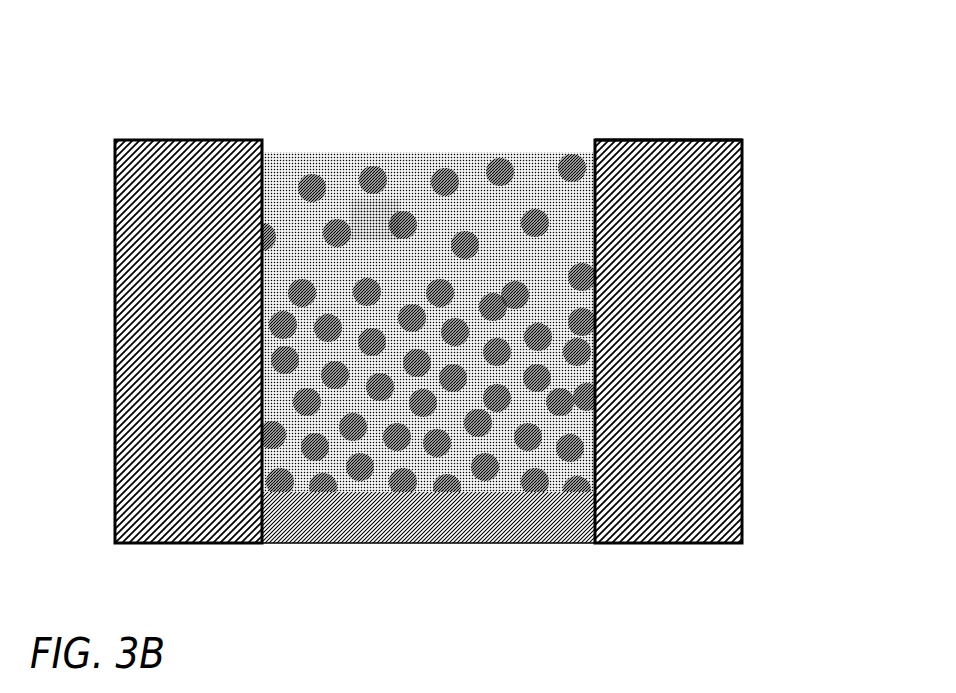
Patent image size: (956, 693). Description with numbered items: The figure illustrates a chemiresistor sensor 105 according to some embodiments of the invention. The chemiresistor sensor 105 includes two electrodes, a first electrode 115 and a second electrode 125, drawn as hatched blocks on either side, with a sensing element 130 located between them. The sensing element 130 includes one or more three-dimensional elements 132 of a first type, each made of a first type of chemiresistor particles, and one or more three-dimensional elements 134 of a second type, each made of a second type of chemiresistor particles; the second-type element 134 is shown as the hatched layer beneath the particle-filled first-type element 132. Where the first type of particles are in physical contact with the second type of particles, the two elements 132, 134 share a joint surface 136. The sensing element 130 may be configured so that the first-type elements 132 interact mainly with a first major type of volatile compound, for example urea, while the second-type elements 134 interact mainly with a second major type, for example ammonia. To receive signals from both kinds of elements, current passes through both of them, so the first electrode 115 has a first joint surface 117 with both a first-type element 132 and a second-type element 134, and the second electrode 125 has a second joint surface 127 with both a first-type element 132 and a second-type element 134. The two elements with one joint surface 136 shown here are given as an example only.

The chemiresistor sensor 105 is at (168, 78).
The second electrode 125 is at (170, 348).
The first electrode 115 is at (686, 357).
The first joint surface 117 is at (600, 180).
The sensing element 130 is at (348, 198).
The first type of 3D element 132 is at (377, 223).
The joint surface 136 is at (382, 293).
The second type of 3D element 134 is at (333, 463).
The second joint surface 127 is at (266, 425).